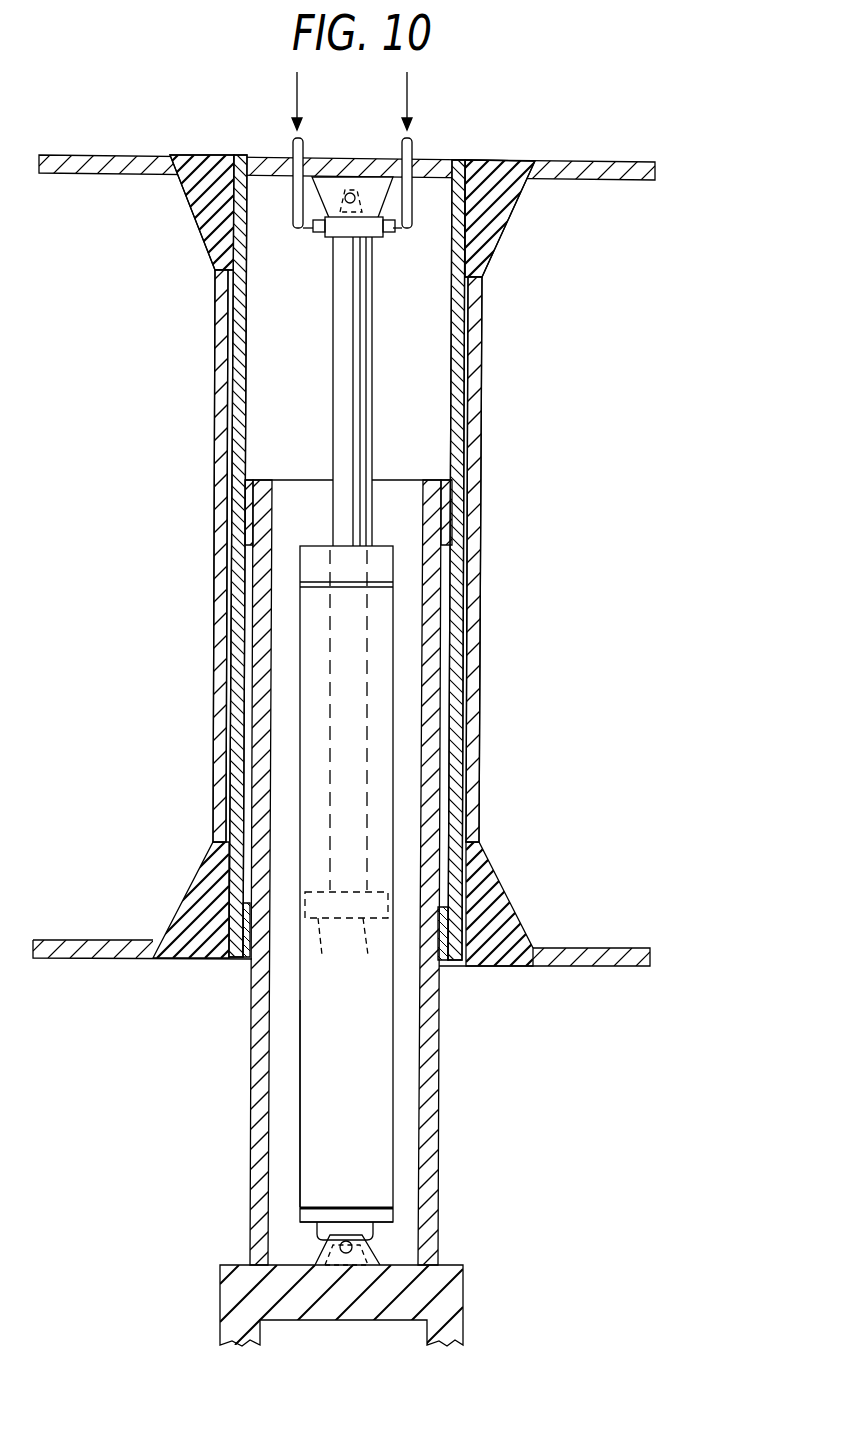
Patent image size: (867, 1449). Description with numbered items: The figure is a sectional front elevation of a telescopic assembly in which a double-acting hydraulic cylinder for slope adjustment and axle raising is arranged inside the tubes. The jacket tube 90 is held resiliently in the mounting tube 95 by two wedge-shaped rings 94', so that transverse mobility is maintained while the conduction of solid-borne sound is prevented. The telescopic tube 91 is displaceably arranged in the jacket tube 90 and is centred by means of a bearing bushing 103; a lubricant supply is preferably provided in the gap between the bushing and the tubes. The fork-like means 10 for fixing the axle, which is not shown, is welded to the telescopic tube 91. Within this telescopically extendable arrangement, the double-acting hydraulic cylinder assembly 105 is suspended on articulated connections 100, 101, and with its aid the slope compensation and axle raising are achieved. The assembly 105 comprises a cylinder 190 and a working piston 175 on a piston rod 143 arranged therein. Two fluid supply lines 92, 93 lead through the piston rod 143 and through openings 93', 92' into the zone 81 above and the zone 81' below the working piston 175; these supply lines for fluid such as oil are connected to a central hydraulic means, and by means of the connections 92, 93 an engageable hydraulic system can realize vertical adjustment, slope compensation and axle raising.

The fork-like means 10 is at (232, 1298).
The zone above the working piston 81 is at (408, 884).
The zone below the working piston 81' is at (387, 1136).
The jacket tube 90 is at (452, 405).
The telescopic tube 91 is at (438, 1140).
The fluid supply line 92 is at (403, 212).
The fluid supply line 93 is at (297, 211).
The opening 92' is at (351, 895).
The opening 93' is at (323, 957).
The wedge-shaped ring 94' is at (344, 569).
The mounting tube 95 is at (481, 346).
The articulated connection 100 is at (348, 1240).
The articulated connection 101 is at (352, 192).
The bearing bushing 103 is at (250, 478).
The double-acting hydraulic cylinder assembly 105 is at (398, 668).
The piston rod 143 is at (343, 339).
The working piston 175 is at (365, 952).
The cylinder 190 is at (298, 1135).